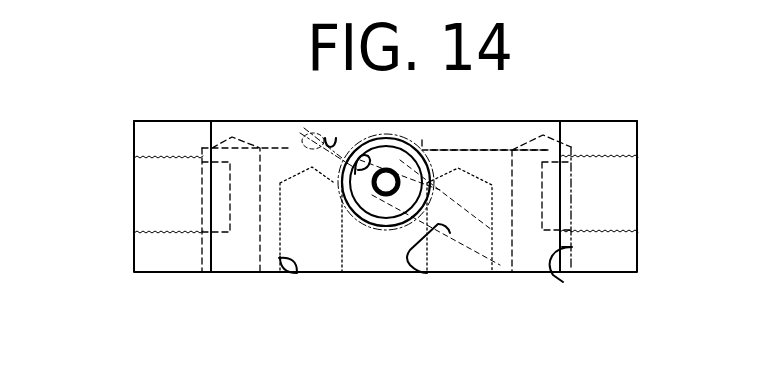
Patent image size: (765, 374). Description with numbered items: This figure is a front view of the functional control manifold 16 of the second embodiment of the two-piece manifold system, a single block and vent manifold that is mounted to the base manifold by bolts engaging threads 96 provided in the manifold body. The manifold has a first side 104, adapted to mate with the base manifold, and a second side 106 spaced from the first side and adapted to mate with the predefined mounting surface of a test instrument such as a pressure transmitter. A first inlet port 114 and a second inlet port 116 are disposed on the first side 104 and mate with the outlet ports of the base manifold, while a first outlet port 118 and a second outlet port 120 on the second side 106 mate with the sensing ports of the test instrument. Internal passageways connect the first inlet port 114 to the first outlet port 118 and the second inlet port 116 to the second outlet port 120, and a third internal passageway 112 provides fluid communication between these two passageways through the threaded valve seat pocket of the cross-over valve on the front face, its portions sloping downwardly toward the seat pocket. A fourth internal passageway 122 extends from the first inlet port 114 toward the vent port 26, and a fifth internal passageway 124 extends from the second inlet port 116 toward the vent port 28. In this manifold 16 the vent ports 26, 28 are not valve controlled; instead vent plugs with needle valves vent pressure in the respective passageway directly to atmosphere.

The functional control manifold 16 is at (603, 103).
The vent port 26 is at (183, 160).
The vent port 28 is at (597, 230).
The threads 96 is at (293, 276).
The first side 104 is at (392, 273).
The second side 106 is at (202, 121).
The third internal passageway 112 is at (390, 238).
The first inlet port 114 is at (260, 243).
The second inlet port 116 is at (563, 281).
The first outlet port 118 is at (313, 143).
The second outlet port 120 is at (427, 134).
The fourth internal passageway 122 is at (335, 144).
The fifth internal passageway 124 is at (427, 273).